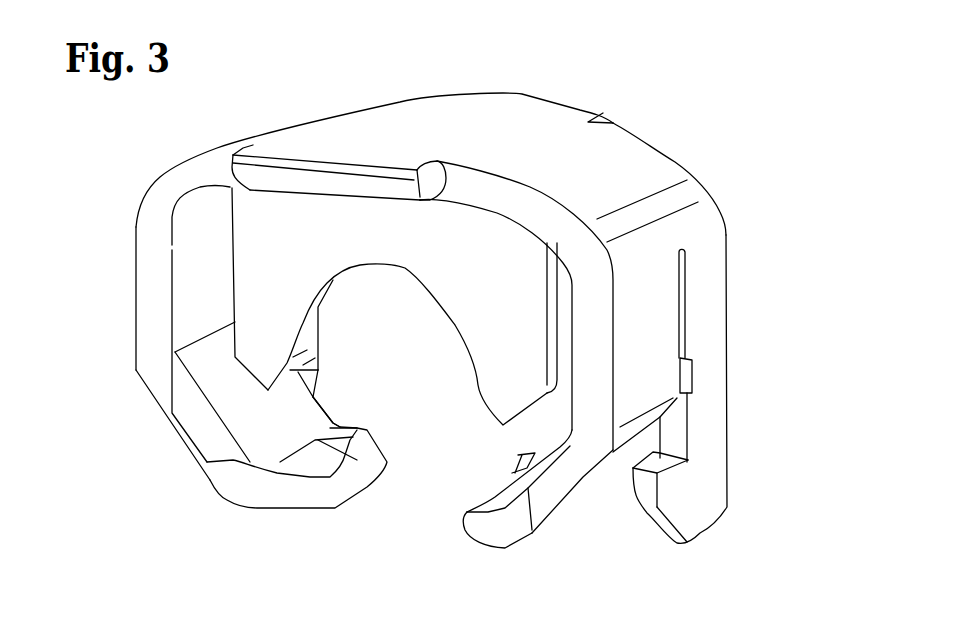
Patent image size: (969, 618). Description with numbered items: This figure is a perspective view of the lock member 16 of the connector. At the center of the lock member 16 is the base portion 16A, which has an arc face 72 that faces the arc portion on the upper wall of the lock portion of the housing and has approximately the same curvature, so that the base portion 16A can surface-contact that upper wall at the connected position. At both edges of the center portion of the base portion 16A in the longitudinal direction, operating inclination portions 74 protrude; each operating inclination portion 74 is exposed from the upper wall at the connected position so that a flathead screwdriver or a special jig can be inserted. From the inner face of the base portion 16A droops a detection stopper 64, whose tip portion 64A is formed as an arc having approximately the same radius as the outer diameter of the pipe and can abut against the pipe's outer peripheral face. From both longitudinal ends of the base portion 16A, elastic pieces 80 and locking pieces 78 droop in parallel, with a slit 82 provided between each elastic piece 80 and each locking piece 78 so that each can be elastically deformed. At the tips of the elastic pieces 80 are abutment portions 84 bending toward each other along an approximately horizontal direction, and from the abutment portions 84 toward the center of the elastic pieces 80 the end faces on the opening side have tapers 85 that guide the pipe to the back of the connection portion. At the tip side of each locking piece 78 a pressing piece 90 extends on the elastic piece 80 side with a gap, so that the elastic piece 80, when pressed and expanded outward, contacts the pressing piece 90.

The lock member 16 is at (675, 65).
The base portion 16A is at (433, 124).
The operating inclination portion 74 is at (310, 177).
The arc face 72 is at (450, 200).
The detection stopper 64 is at (397, 262).
The tip portion 64A is at (490, 411).
The elastic piece 80 is at (136, 278).
The slit 82 is at (686, 256).
The locking piece 78 is at (717, 275).
The taper 85 is at (287, 495).
The abutment portion 84 is at (465, 511).
The pressing piece 90 is at (677, 508).